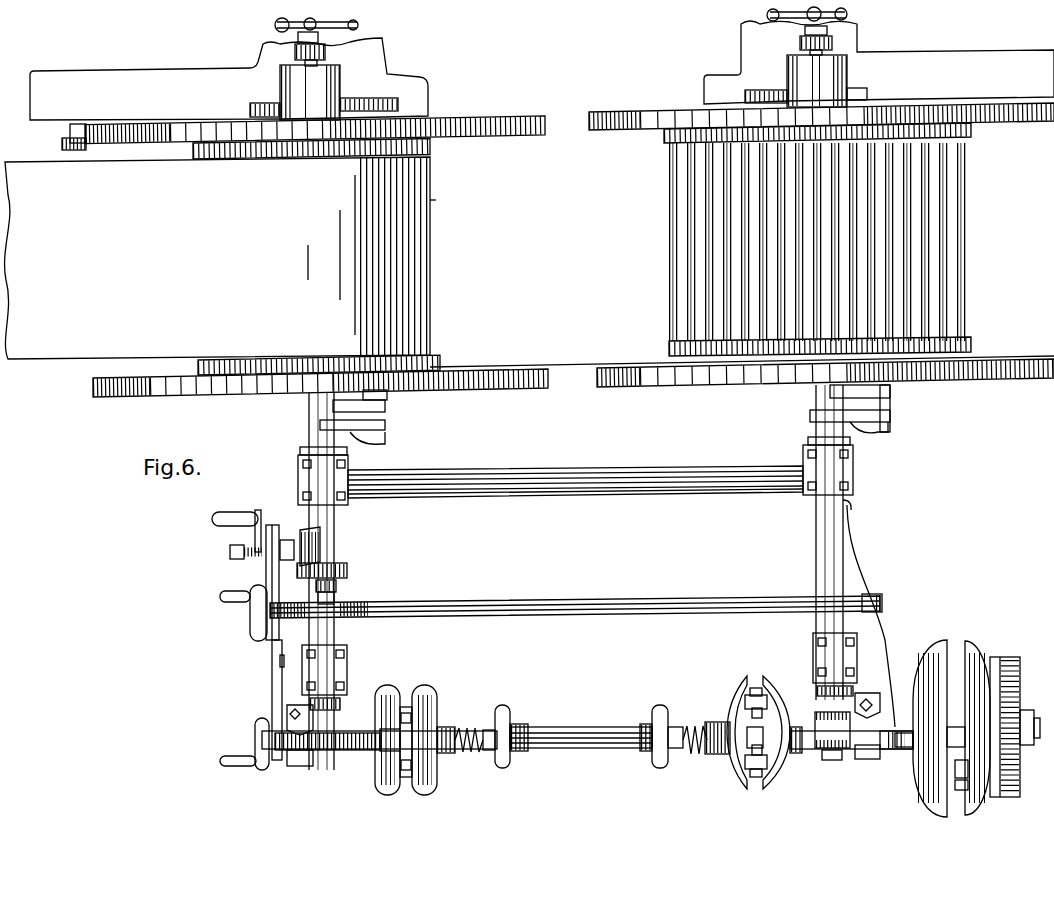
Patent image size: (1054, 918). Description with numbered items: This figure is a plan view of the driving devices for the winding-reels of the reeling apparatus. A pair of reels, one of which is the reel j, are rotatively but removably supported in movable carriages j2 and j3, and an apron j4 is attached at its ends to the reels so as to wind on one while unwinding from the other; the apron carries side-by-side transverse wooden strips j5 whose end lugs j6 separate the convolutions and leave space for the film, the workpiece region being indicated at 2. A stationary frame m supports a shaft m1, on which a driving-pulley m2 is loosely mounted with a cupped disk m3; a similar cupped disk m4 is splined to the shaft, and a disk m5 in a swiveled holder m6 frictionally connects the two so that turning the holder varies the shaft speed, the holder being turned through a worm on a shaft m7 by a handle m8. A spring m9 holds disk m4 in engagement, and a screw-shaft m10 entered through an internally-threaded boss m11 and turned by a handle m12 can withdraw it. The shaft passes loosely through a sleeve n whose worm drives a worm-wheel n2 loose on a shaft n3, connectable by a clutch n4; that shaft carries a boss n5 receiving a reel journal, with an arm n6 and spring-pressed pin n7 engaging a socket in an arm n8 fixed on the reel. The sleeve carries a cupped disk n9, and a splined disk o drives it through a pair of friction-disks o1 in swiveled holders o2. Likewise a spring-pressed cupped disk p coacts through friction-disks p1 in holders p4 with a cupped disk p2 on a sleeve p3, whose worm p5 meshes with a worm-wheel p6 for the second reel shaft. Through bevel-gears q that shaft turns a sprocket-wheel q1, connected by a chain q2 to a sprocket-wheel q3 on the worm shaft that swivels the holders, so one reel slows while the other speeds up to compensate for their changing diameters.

The work body / workpiece 2 is at (218, 258).
The reel j is at (558, 243).
The movable frame or carriage j2 is at (230, 69).
The movable frame or carriage j3 is at (879, 57).
The apron j4 is at (494, 221).
The wooden strips j5 is at (963, 248).
The lugs j6 is at (305, 150).
The sleeve n is at (240, 515).
The worm-wheel n2 is at (866, 758).
The shaft n3 is at (830, 578).
The clutch n4 is at (830, 700).
The boss n5 is at (815, 433).
The arm n6 is at (890, 414).
The spring-pressed pin n7 is at (890, 436).
The arm n8 is at (880, 392).
The cupped disk n9 is at (830, 760).
The bevel-gears q is at (325, 570).
The sprocket-wheel q1 is at (282, 530).
The chain q2 is at (272, 705).
The sprocket-wheel q3 is at (272, 762).
The stationary frame m is at (338, 533).
The shaft m1 is at (570, 730).
The driving-pulley m2 is at (1005, 658).
The cupped disk m3 is at (975, 648).
The cupped disk m4 is at (927, 645).
The disk m5 is at (1000, 795).
The swiveled holder m6 is at (962, 768).
The shaft m7 is at (908, 752).
The handle m8 is at (255, 754).
The spring m9 is at (893, 625).
The screw-shaft m10 is at (640, 602).
The internally-threaded boss m11 is at (345, 606).
The handle m12 is at (250, 605).
The cupped disk o is at (735, 698).
The friction-disks o1 is at (740, 682).
The swiveled holder o2 is at (754, 694).
The cupped disk p is at (425, 718).
The friction-disks p1 is at (414, 702).
The cupped disk p2 is at (390, 690).
The sleeve p3 is at (360, 752).
The swiveled holders p4 is at (405, 712).
The worm p5 is at (402, 762).
The worm-wheel p6 is at (318, 752).